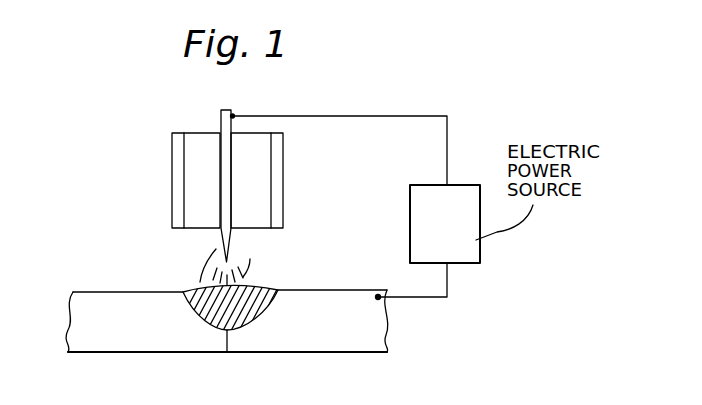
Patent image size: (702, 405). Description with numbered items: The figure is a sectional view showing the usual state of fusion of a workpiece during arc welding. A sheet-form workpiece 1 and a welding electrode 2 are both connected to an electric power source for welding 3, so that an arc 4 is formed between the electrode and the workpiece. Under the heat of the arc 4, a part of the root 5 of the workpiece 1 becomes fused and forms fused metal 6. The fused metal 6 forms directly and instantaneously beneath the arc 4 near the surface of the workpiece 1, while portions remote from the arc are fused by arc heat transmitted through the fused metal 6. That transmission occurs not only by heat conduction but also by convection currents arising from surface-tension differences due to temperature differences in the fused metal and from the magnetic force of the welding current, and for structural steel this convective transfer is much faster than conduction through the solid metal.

The workpiece 1 is at (315, 332).
The welding electrode 2 is at (236, 247).
The electric power source for welding 3 is at (457, 238).
The arc 4 is at (200, 263).
The root 5 is at (229, 334).
The fused metal 6 is at (193, 290).